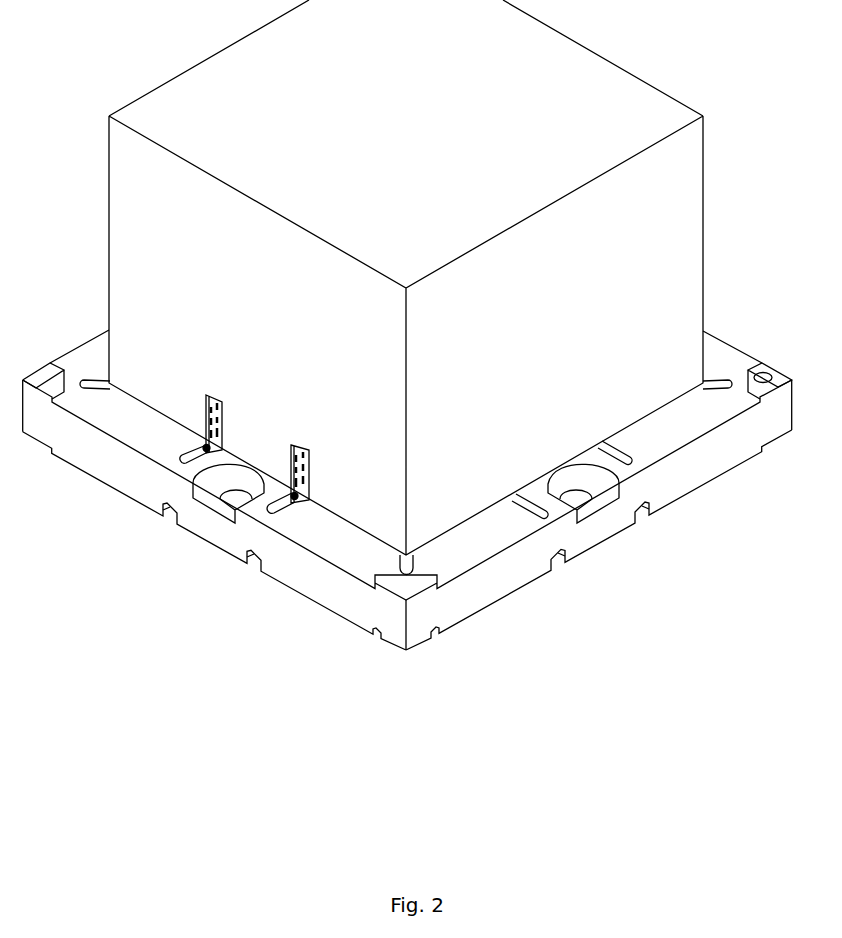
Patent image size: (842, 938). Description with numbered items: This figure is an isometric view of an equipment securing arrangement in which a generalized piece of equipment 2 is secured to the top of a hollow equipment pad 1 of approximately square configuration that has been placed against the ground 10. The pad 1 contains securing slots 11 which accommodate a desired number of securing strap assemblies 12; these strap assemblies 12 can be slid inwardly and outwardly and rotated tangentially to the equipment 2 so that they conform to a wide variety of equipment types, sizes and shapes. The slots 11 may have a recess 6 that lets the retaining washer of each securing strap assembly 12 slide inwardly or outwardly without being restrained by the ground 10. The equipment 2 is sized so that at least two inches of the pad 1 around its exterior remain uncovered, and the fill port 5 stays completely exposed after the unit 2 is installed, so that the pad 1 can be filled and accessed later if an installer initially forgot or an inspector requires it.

The equipment pad 1 is at (722, 455).
The equipment 2 is at (703, 236).
The fill port 5 is at (772, 370).
The recess 6 is at (171, 513).
The ground 10 is at (422, 471).
The securing slots 11 is at (95, 380).
The securing strap assemblies 12 is at (206, 395).